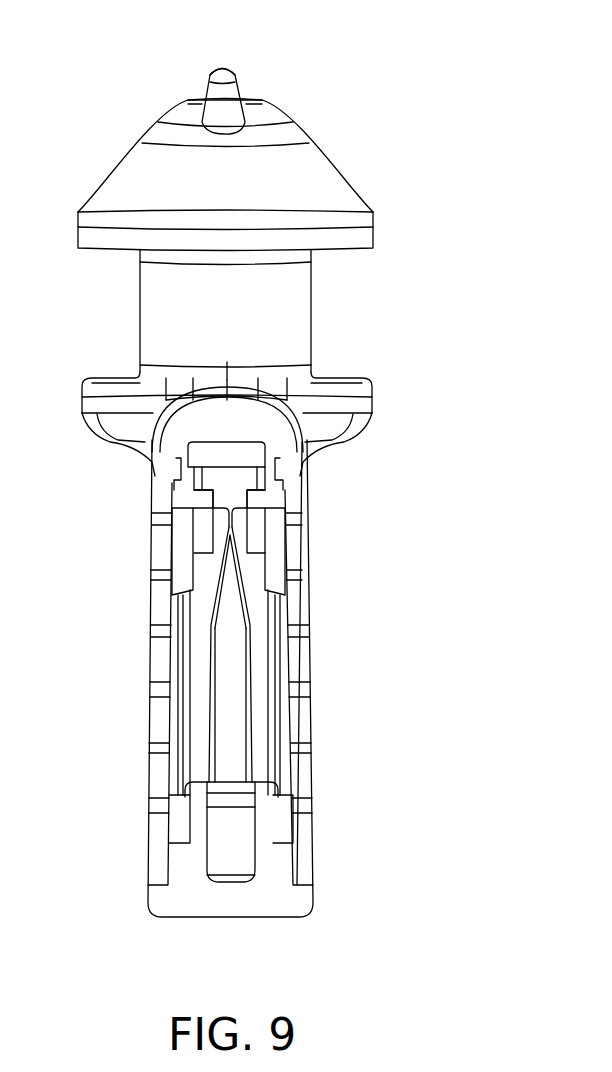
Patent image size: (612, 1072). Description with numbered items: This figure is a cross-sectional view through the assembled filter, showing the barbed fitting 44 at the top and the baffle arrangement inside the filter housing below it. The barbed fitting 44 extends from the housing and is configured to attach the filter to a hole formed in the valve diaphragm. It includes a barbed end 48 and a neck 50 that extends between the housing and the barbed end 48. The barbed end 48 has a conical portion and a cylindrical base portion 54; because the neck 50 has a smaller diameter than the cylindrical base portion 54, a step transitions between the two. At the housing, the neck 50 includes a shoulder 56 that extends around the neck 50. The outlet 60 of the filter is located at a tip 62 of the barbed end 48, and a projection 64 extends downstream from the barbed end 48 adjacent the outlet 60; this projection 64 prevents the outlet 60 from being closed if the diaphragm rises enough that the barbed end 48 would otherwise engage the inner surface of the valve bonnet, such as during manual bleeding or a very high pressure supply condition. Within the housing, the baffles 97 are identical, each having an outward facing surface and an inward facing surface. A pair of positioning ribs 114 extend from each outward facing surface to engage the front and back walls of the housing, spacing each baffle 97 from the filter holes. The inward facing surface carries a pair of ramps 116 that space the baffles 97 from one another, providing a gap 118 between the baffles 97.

The barbed fitting 44 is at (242, 242).
The barbed end 48 is at (112, 170).
The neck 50 is at (311, 305).
The cylindrical base portion 54 is at (373, 229).
The shoulder 56 is at (342, 373).
The outlet 60 is at (247, 99).
The tip 62 is at (157, 122).
The projection 64 is at (224, 66).
The baffles 97 is at (197, 745).
The positioning ribs 114 is at (180, 555).
The ramps 116 is at (215, 537).
The gap 118 is at (233, 663).